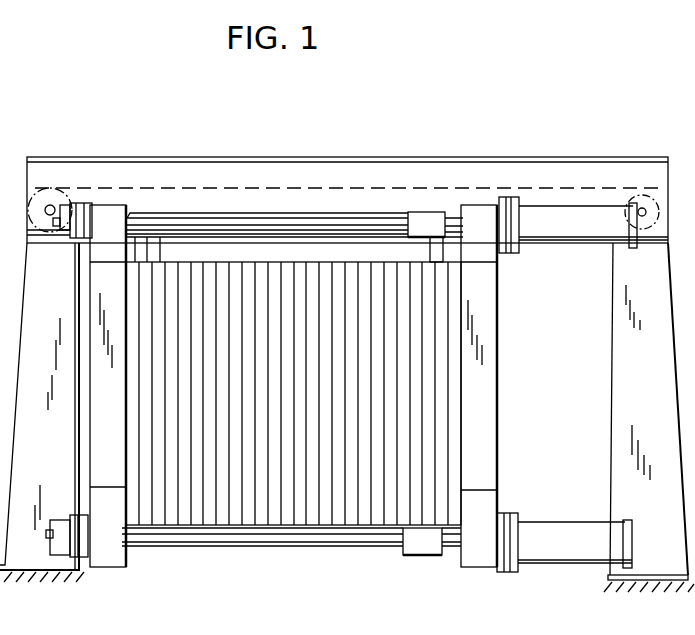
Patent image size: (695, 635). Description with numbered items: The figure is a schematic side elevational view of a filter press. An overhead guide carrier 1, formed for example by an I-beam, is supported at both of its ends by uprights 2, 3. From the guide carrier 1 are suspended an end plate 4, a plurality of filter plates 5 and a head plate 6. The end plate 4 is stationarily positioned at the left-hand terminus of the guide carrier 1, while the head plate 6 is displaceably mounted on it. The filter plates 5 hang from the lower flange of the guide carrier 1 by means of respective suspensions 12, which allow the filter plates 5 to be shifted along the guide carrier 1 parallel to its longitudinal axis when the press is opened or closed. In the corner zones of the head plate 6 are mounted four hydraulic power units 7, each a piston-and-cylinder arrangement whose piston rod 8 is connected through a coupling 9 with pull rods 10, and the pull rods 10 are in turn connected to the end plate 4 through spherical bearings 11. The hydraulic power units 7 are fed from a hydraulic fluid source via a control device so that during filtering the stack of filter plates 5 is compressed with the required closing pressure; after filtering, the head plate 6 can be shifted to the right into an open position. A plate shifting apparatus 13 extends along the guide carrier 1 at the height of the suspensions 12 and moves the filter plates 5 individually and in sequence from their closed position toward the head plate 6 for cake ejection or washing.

The guide carrier 1 is at (330, 180).
The upright 2 is at (62, 281).
The upright 3 is at (651, 386).
The end plate 4 is at (112, 414).
The filter plates 5 is at (184, 518).
The head plate 6 is at (486, 419).
The hydraulic power unit 7 is at (560, 237).
The piston rod 8 is at (455, 220).
The coupling 9 is at (425, 218).
The pull rods 10 is at (258, 222).
The spherical bearings 11 is at (82, 192).
The suspensions 12 is at (160, 245).
The plate shifting apparatus 13 is at (505, 192).